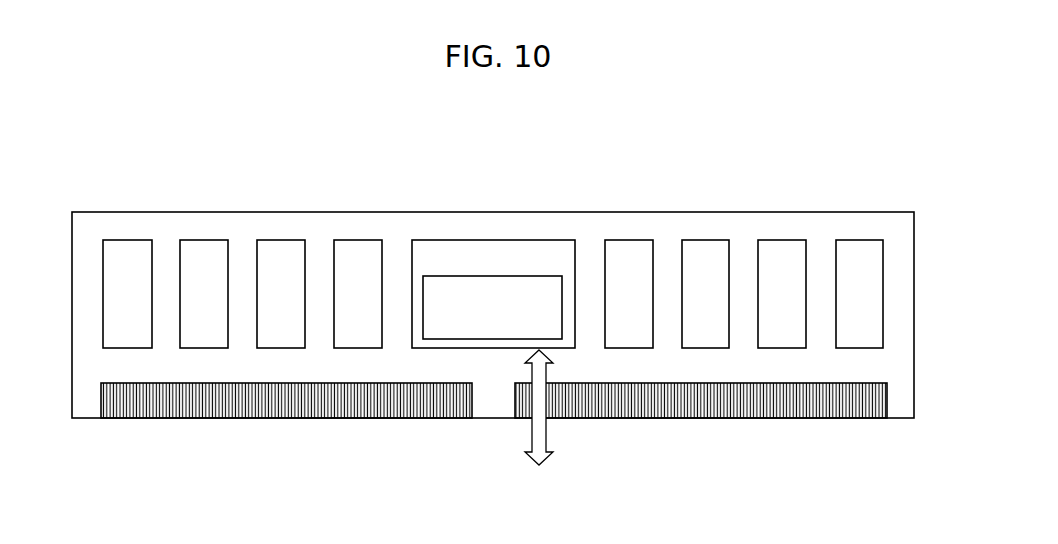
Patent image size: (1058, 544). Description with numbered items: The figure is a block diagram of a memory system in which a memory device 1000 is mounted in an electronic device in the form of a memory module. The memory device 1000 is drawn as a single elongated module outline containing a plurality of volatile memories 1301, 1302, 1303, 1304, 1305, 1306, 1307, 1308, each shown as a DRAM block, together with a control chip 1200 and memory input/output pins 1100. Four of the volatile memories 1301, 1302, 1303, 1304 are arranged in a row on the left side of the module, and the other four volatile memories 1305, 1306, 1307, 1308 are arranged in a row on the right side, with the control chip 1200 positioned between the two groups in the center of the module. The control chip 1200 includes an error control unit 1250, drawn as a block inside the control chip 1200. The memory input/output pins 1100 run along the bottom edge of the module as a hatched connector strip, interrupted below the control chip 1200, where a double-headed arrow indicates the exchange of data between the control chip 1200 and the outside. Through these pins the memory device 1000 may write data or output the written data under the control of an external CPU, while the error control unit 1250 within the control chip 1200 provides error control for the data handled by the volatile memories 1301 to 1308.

The memory device 1000 is at (905, 212).
The memory input/output pins 1100 is at (192, 420).
The control chip 1200 is at (493, 240).
The error control unit 1250 is at (558, 276).
The volatile memory 1301 is at (127, 240).
The volatile memory 1302 is at (204, 240).
The volatile memory 1303 is at (281, 240).
The volatile memory 1304 is at (359, 240).
The volatile memory 1305 is at (628, 240).
The volatile memory 1306 is at (706, 240).
The volatile memory 1307 is at (781, 240).
The volatile memory 1308 is at (858, 240).